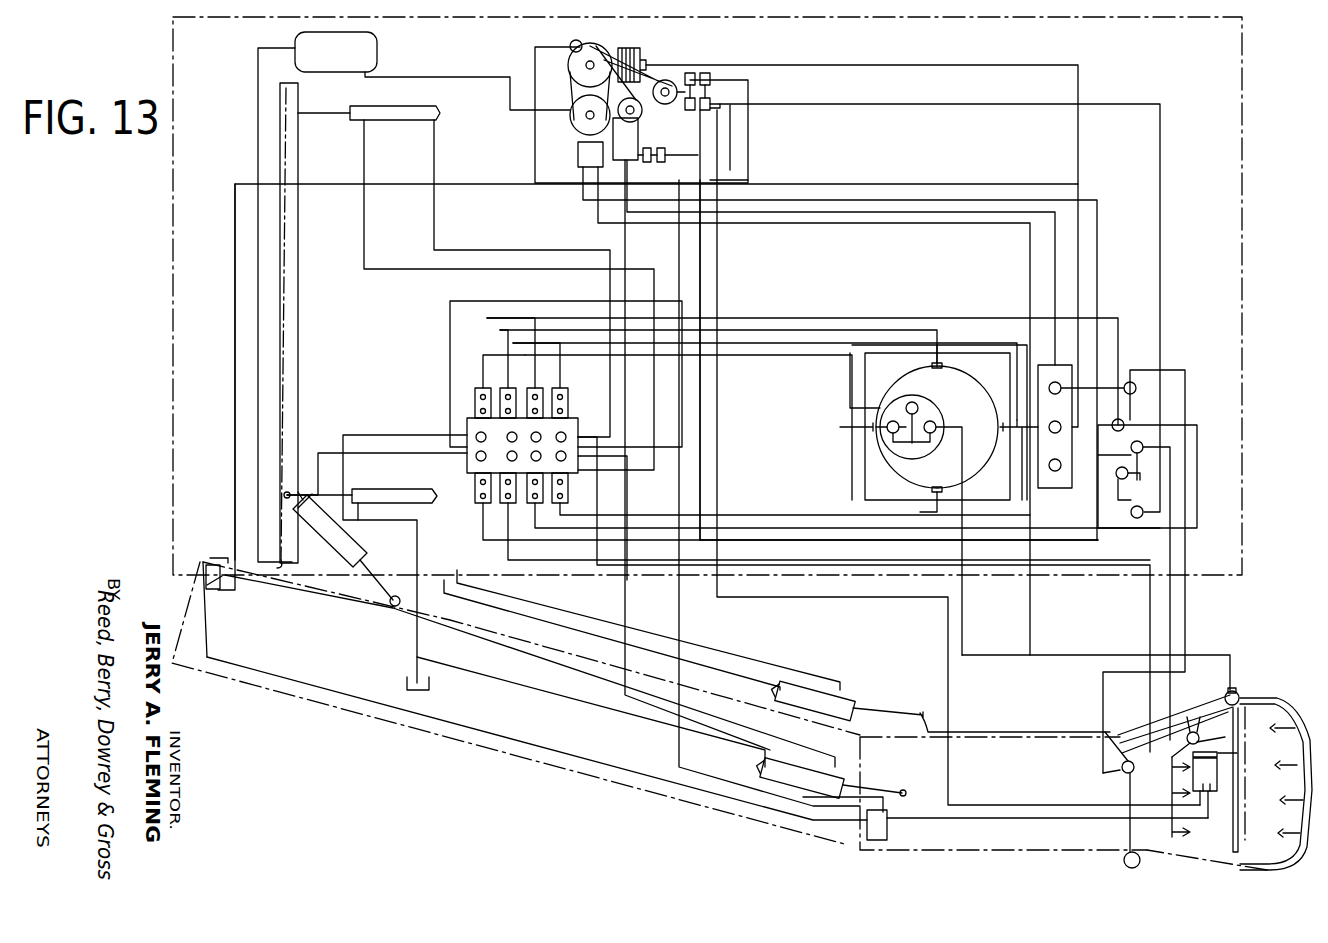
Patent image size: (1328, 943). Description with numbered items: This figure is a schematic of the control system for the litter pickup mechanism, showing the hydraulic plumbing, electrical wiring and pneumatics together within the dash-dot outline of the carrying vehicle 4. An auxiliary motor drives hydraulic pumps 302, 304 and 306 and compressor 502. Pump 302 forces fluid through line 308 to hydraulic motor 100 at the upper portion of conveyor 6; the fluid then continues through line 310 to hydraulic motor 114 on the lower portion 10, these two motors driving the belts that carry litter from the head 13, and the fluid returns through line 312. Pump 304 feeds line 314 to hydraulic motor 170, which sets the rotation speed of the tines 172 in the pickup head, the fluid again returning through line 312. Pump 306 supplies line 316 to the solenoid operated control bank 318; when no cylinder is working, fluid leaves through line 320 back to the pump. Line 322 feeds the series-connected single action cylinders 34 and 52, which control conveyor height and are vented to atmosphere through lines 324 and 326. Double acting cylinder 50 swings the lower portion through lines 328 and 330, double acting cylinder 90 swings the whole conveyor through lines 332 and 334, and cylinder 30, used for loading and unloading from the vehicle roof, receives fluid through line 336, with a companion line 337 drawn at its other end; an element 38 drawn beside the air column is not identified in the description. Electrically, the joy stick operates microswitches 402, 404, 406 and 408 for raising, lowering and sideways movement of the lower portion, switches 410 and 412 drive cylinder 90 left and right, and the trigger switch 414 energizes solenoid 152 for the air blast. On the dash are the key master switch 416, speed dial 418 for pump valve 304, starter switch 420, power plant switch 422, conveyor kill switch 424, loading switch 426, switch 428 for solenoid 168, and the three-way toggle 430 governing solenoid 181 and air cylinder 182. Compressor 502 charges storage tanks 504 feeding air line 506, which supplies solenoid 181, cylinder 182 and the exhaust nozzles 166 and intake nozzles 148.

The vehicle 4 is at (1242, 292).
The conveyor 6 is at (592, 802).
The lower portion of the conveyor 10 is at (1040, 848).
The pickup head 13 is at (1248, 680).
The cylinder 30 is at (395, 112).
The cylinder 34 is at (396, 494).
The mast 38 is at (298, 343).
The double acting cylinder 50 is at (835, 692).
The cylinder 52 is at (813, 773).
The double acting cylinder 90 is at (335, 536).
The hydraulic motor 100 is at (214, 595).
The hydraulic motor 114 is at (883, 840).
The nozzles 148 is at (1300, 735).
The solenoid 152 is at (1240, 695).
The nozzles 166 is at (1168, 778).
The solenoid 168 is at (1193, 730).
The hydraulic motor 170 is at (1208, 795).
The tines 172 is at (1240, 800).
The solenoid 181 is at (1122, 770).
The air cylinder 182 is at (1125, 863).
The hydraulic pump 302 is at (688, 73).
The hydraulic pump 304 is at (691, 424).
The hydraulic pump 306 is at (633, 162).
The line 308 is at (748, 140).
The line 310 is at (697, 790).
The line 312 is at (678, 745).
The line 314 is at (748, 172).
The line 316 is at (698, 243).
The solenoid operated control bank 318 is at (467, 420).
The line 320 is at (452, 340).
The line 322 is at (617, 468).
The line 324 is at (412, 552).
The line 326 is at (547, 692).
The line 328 is at (537, 605).
The line 330 is at (580, 635).
The line 332 is at (318, 452).
The line 334 is at (368, 432).
The line 336 is at (362, 160).
The hydraulic line 337 is at (432, 152).
The microswitch 402 is at (875, 430).
The microswitch 404 is at (1000, 462).
The microswitch 406 is at (945, 367).
The microswitch 408 is at (937, 492).
The switch 410 is at (893, 420).
The switch 412 is at (916, 403).
The switch 414 is at (937, 426).
The master switch 416 is at (1139, 483).
The variable speed dial 418 is at (1137, 518).
The starter switch 420 is at (1052, 382).
The second switch 422 is at (1050, 432).
The master switch 424 is at (1058, 472).
The switch 426 is at (1125, 425).
The switch 428 is at (1143, 450).
The toggle switch 430 is at (1128, 380).
The compressor 502 is at (578, 118).
The storage tanks 504 is at (355, 63).
The air line 506 is at (255, 135).